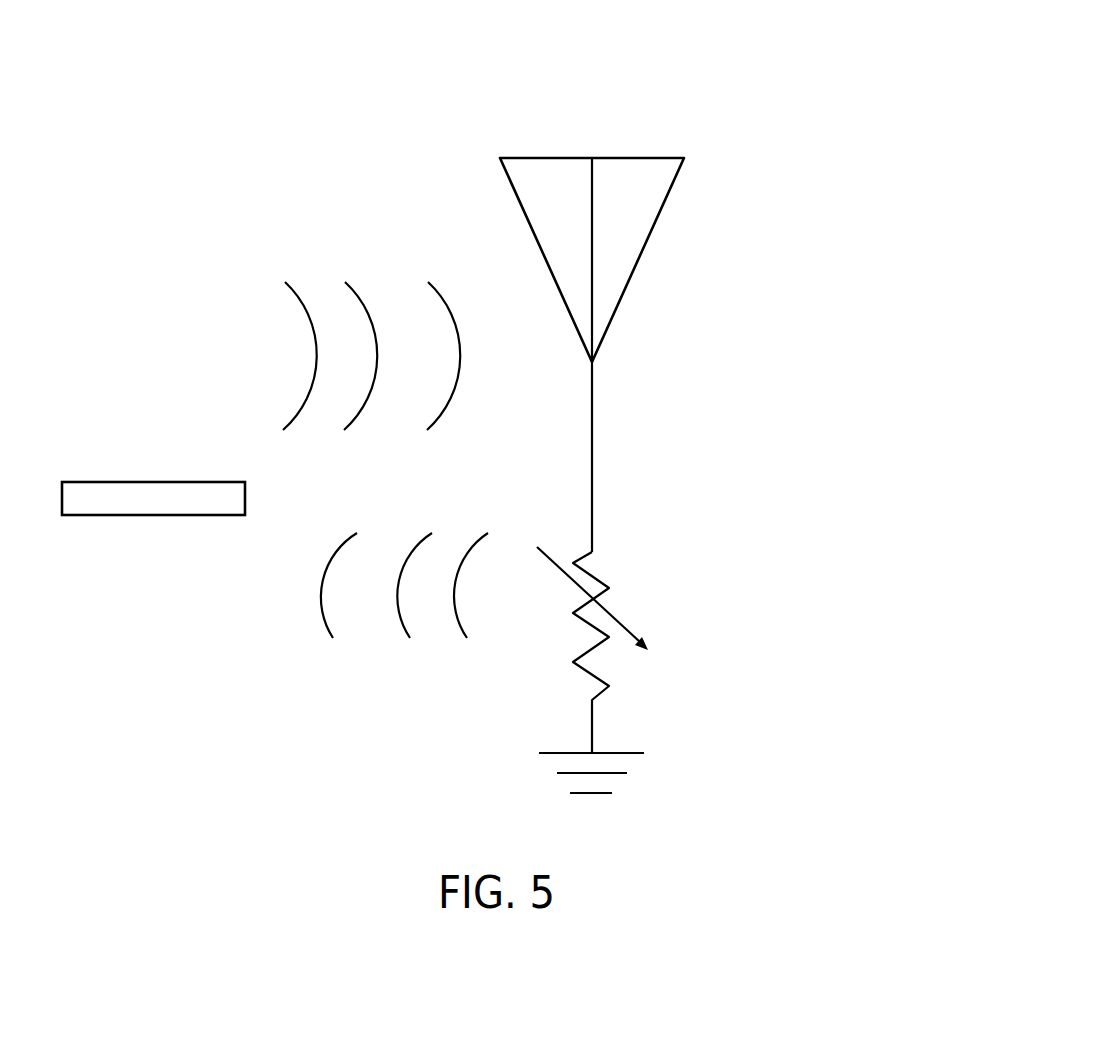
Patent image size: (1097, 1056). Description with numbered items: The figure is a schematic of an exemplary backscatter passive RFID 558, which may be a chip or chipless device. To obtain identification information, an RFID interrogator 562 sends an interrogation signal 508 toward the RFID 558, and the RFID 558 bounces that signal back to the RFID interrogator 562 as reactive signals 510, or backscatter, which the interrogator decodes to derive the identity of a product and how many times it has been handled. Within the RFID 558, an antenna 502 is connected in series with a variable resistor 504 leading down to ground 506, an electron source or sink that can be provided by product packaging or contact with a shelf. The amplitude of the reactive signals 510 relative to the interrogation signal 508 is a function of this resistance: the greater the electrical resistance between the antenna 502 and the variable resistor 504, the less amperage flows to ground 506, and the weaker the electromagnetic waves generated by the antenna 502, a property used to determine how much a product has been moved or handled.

The antenna 502 is at (760, 160).
The variable resistor 504 is at (760, 542).
The ground 506 is at (760, 748).
The interrogation signal 508 is at (301, 346).
The reactive signals 510 is at (358, 639).
The backscatter passive RFID 558 is at (674, 407).
The RFID interrogator 562 is at (152, 480).